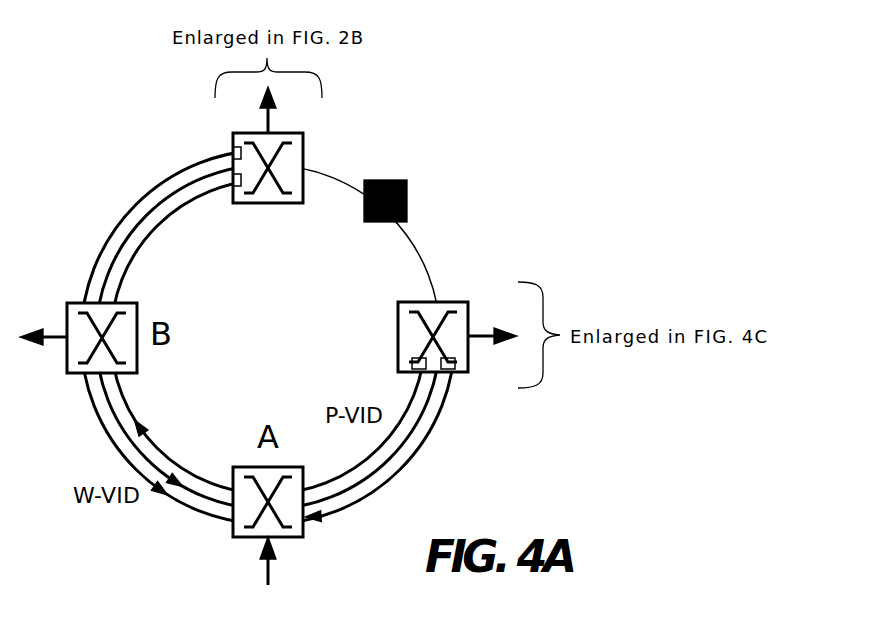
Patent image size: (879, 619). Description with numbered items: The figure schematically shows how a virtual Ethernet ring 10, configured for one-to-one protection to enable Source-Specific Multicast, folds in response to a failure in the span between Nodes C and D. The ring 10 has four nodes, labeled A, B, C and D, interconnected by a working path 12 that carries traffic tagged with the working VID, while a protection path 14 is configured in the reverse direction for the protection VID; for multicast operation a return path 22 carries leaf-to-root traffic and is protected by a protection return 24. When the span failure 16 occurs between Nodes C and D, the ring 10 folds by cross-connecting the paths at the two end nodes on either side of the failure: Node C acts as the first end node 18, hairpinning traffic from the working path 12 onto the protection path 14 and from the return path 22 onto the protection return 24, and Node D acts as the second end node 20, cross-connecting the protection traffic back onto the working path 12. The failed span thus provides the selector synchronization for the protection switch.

The Ethernet ring 10 is at (518, 218).
The working path 12 is at (133, 202).
The protection path 14 is at (163, 230).
The span failure 16 is at (407, 183).
The first end node 18 is at (305, 143).
The second end node 20 is at (470, 362).
The return path 22 is at (187, 173).
The protection return 24 is at (183, 205).